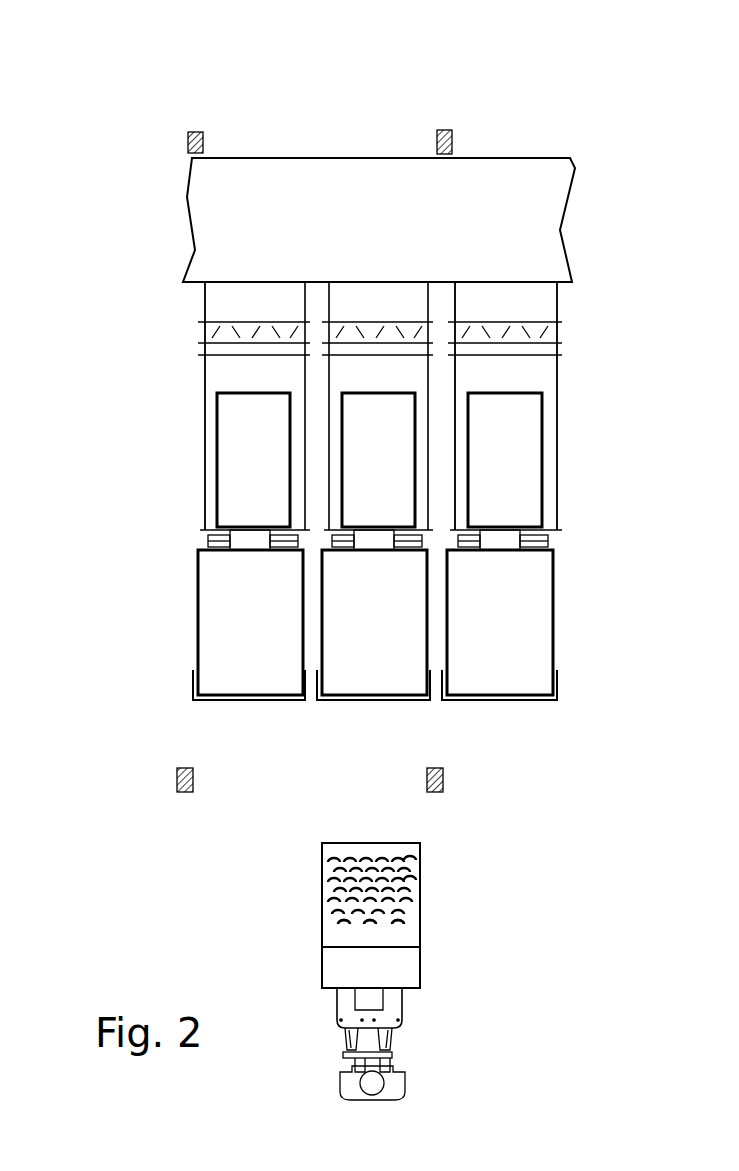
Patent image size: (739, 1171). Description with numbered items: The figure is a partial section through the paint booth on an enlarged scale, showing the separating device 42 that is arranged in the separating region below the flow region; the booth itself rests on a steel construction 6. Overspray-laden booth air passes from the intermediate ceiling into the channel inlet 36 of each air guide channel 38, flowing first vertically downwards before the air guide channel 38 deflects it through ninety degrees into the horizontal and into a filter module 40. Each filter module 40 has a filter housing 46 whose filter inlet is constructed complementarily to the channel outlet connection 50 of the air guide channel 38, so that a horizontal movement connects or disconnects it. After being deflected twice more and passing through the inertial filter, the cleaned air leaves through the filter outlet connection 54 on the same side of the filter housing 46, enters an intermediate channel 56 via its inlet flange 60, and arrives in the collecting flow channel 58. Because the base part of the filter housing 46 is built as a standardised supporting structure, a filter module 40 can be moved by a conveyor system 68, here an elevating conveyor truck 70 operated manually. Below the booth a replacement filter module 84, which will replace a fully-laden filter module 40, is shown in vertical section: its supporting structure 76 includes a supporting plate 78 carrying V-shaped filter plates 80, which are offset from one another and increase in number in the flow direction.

The steel construction 6 is at (447, 124).
The channel inlet 36 is at (228, 432).
The air guide channel 38 is at (212, 492).
The filter module 40 is at (198, 643).
The separating device 42 is at (576, 395).
The filter housing 46 is at (196, 670).
The channel outlet connection 50 is at (204, 566).
The filter outlet connection 54 is at (205, 552).
The intermediate channel 56 is at (388, 308).
The collecting flow channel 58 is at (540, 215).
The inlet flange 60 is at (205, 531).
The conveyor system 68 is at (301, 1041).
The elevating conveyor truck 70 is at (408, 1007).
The supporting structure 76 is at (343, 936).
The supporting plate 78 is at (322, 918).
The filter plates 80 is at (418, 858).
The replacement filter module 84 is at (426, 925).